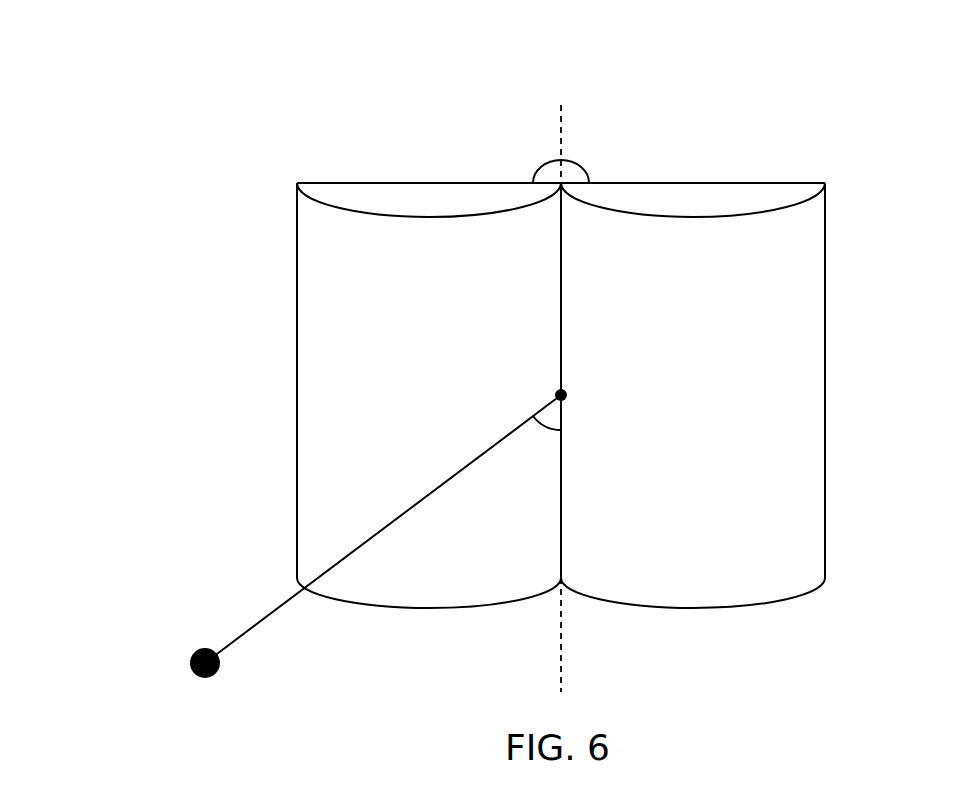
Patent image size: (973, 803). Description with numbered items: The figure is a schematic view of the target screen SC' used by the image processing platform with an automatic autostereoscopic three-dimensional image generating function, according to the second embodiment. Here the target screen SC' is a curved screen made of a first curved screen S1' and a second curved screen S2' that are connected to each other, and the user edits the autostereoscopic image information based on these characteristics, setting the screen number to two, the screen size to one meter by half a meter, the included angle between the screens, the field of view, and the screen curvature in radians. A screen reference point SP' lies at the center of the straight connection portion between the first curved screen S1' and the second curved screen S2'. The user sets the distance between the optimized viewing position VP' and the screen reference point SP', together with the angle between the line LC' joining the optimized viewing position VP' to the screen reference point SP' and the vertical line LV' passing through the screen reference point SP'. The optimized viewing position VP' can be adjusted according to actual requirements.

The target screen SC' is at (561, 305).
The first curved screen S1' is at (369, 395).
The second curved screen S2' is at (760, 394).
The vertical line LV' is at (564, 385).
The screen reference point SP' is at (576, 413).
The line LC' is at (380, 529).
The optimized viewing position VP' is at (168, 616).